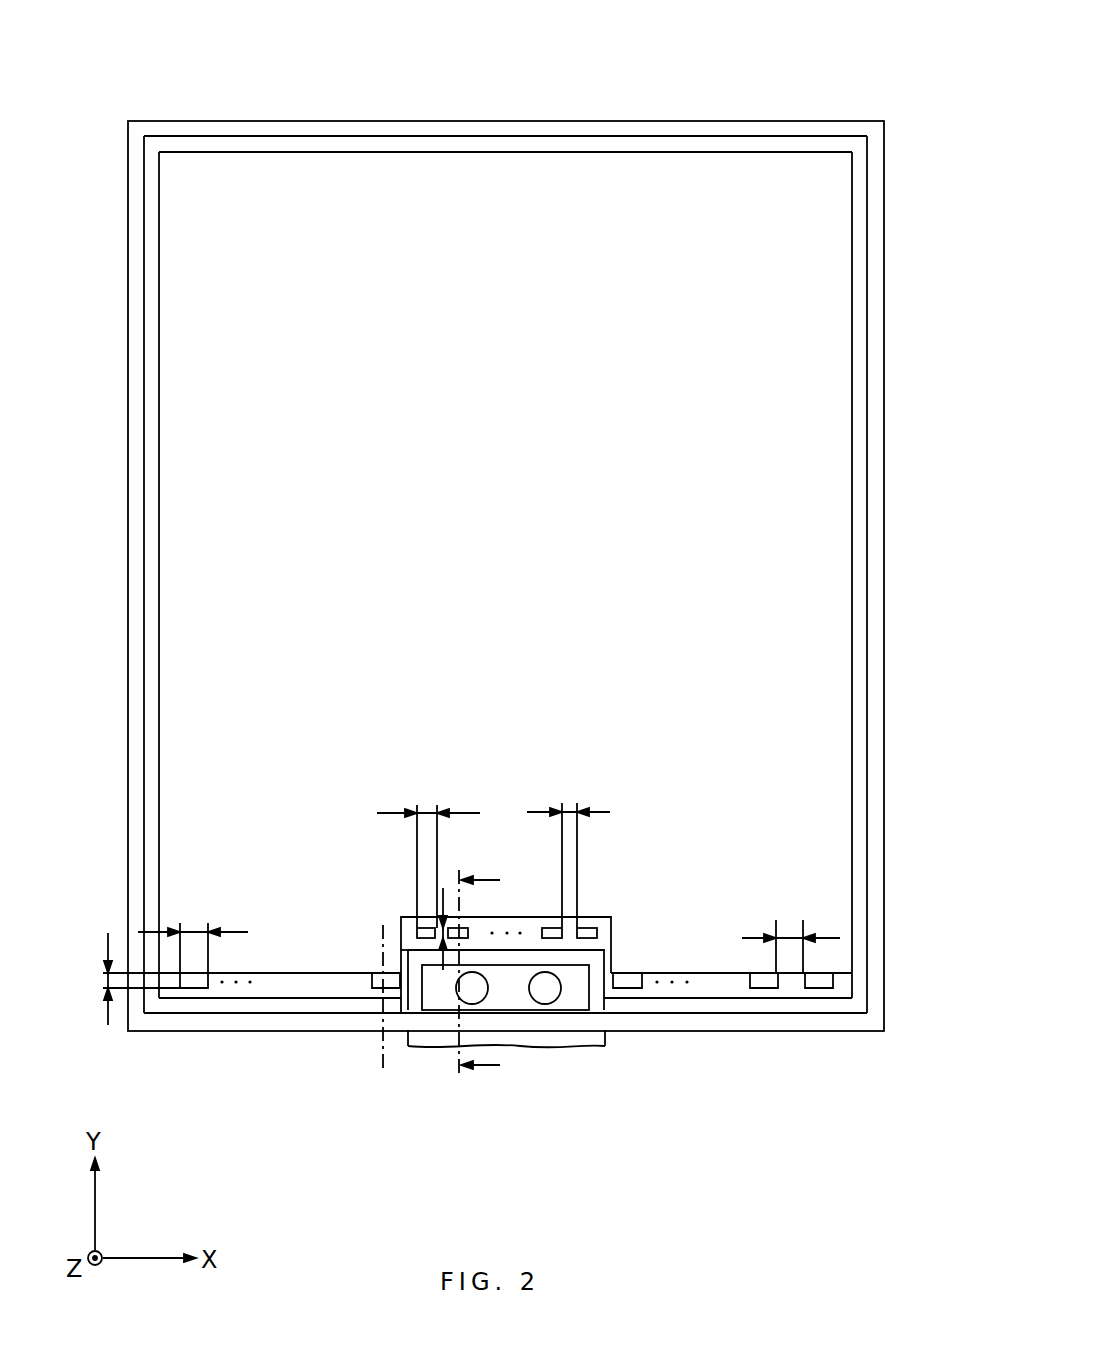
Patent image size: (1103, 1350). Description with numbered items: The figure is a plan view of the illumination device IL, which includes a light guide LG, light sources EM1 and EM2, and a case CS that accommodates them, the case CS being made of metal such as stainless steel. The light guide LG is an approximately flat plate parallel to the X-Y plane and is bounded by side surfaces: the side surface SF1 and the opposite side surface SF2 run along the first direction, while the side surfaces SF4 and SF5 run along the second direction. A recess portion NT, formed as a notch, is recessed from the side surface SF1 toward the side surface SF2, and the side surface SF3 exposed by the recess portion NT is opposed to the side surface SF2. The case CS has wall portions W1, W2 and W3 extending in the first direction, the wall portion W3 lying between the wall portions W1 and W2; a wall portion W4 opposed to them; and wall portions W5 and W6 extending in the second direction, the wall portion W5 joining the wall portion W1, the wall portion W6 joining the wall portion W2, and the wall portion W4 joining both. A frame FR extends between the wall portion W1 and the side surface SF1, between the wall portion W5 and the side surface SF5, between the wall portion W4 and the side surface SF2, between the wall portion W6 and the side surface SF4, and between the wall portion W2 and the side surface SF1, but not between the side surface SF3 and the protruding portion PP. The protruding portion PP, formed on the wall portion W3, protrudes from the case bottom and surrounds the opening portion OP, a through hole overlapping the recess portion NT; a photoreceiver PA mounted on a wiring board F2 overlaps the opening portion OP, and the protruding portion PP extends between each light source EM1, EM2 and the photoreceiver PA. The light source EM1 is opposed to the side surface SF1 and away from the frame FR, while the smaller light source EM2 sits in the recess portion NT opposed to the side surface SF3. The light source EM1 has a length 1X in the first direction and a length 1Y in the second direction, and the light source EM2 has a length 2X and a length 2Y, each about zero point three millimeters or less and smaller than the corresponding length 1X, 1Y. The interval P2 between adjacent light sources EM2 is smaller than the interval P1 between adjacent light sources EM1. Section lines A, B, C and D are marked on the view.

The illumination device IL is at (898, 80).
The case CS is at (878, 163).
The frame FR is at (860, 207).
The light guide LG is at (835, 279).
The wall portion W1 is at (272, 1022).
The wall portion W2 is at (797, 1022).
The wall portion W3 is at (562, 1045).
The wall portion W4 is at (518, 131).
The wall portion W5 is at (132, 432).
The wall portion W6 is at (881, 421).
The side surface SF1 is at (323, 990).
The side surface SF2 is at (642, 142).
The side surface SF3 is at (485, 930).
The side surface SF4 is at (865, 530).
The side surface SF5 is at (150, 541).
The light source EM1 is at (197, 984).
The light source EM2 is at (422, 936).
The protruding portion PP is at (597, 962).
The wiring board F2 is at (600, 1040).
The opening portion OP is at (577, 990).
The photoreceiver PA is at (474, 990).
The recess portion NT is at (529, 908).
The length 1X is at (194, 926).
The length 1Y is at (105, 981).
The length 2X is at (428, 805).
The length 2Y is at (446, 888).
The interval P1 is at (791, 934).
The interval P2 is at (566, 805).
The section line A is at (479, 983).
The section line B is at (480, 867).
The section line C is at (384, 1053).
The section line D is at (387, 949).